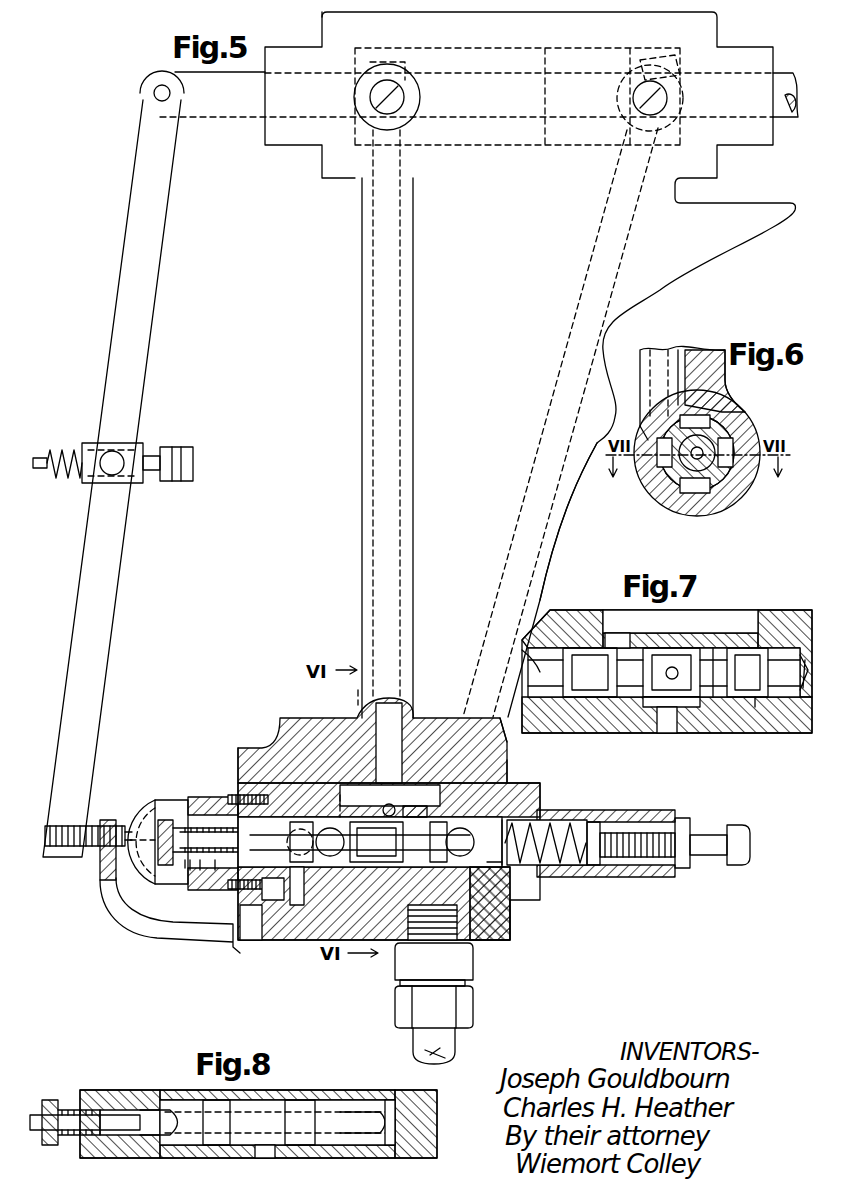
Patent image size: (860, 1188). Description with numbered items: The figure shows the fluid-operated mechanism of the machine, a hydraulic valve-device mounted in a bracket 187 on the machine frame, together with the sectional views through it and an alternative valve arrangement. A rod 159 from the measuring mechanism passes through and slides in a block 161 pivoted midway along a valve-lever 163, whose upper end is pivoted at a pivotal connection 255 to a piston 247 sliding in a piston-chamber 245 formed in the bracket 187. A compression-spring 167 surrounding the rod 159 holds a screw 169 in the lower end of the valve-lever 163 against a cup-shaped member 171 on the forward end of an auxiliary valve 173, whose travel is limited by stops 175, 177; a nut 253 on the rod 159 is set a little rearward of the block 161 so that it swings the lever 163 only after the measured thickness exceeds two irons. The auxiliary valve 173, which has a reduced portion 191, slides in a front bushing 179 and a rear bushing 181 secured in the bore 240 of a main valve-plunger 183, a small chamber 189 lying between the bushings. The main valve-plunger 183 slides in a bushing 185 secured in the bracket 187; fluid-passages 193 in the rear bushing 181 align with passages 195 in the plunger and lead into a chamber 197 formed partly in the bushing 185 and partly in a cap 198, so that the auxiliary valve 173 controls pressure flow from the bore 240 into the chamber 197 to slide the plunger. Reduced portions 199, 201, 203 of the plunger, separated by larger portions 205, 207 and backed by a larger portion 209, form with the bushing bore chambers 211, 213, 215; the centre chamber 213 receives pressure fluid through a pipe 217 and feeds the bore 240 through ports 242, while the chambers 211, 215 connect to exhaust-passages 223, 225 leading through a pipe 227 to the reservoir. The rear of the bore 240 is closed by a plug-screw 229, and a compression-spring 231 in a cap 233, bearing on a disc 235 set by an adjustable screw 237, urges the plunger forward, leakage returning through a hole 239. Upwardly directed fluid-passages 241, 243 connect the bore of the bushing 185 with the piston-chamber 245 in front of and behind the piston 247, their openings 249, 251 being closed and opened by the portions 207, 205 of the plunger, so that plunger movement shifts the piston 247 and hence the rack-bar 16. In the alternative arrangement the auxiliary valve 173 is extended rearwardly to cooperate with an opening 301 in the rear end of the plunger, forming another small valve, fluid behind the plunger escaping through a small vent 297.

In FIG. 5, the rack-bar 16 is at (783, 82).
In FIG. 5, the rod 159 is at (152, 453).
In FIG. 5, the block 161 is at (132, 484).
In FIG. 5, the valve-lever 163 is at (118, 357).
In FIG. 5, the compression-spring 167 is at (70, 450).
In FIG. 5, the screw 169 is at (45, 825).
In FIG. 5, the cup-shaped member 171 is at (132, 818).
In FIG. 5, the auxiliary valve 173 is at (162, 800).
In FIG. 8, the auxiliary valve 173 is at (42, 1110).
In FIG. 5, the stop 175 is at (107, 885).
In FIG. 5, the rear stop 177 is at (192, 797).
In FIG. 5, the front bushing 179 is at (128, 883).
In FIG. 5, the rear bushing 181 is at (200, 870).
In FIG. 5, the main valve-plunger 183 is at (185, 870).
In FIG. 7, the main valve-plunger 183 is at (532, 678).
In FIG. 8, the main valve-plunger 183 is at (108, 1110).
In FIG. 5, the bushing 185 is at (452, 790).
In FIG. 6, the bushing 185 is at (662, 495).
In FIG. 7, the bushing 185 is at (556, 614).
In FIG. 5, the bracket 187 is at (546, 531).
In FIG. 6, the bracket 187 is at (722, 495).
In FIG. 5, the small chamber 189 is at (207, 820).
In FIG. 5, the reduced portion 191 is at (276, 889).
In FIG. 5, the fluid-passages 193 is at (215, 870).
In FIG. 5, the passages 195 is at (232, 794).
In FIG. 5, the chamber 197 is at (228, 878).
In FIG. 5, the cap 198 is at (190, 870).
In FIG. 5, the reduced portion 199 is at (300, 868).
In FIG. 7, the reduced portion 199 is at (590, 672).
In FIG. 5, the reduced portion 201 is at (425, 864).
In FIG. 7, the reduced portion 201 is at (685, 650).
In FIG. 5, the reduced portion 203 is at (487, 900).
In FIG. 7, the reduced portion 203 is at (747, 672).
In FIG. 5, the larger portion 205 is at (345, 862).
In FIG. 6, the larger portion 205 is at (714, 448).
In FIG. 7, the larger portion 205 is at (630, 690).
In FIG. 8, the larger portion 205 is at (215, 1140).
In FIG. 5, the larger portion 207 is at (434, 966).
In FIG. 7, the larger portion 207 is at (713, 655).
In FIG. 8, the larger portion 207 is at (300, 1140).
In FIG. 5, the larger portion 209 is at (522, 875).
In FIG. 7, the larger portion 209 is at (783, 652).
In FIG. 5, the chamber 211 is at (297, 905).
In FIG. 5, the centre chamber 213 is at (372, 858).
In FIG. 5, the chamber 215 is at (480, 905).
In FIG. 7, the chamber 215 is at (752, 692).
In FIG. 7, the pipe 217 is at (668, 722).
In FIG. 5, the exhaust-passage 223 is at (262, 905).
In FIG. 5, the exhaust-passage 225 is at (470, 915).
In FIG. 5, the pipe 227 is at (416, 1048).
In FIG. 5, the plug-screw 229 is at (512, 790).
In FIG. 5, the compression-spring 231 is at (548, 822).
In FIG. 5, the cap 233 is at (632, 814).
In FIG. 5, the disc 235 is at (592, 838).
In FIG. 5, the adjustable screw 237 is at (668, 877).
In FIG. 5, the hole 239 is at (520, 890).
In FIG. 5, the bore 240 is at (293, 780).
In FIG. 5, the fluid-passage 241 is at (392, 481).
In FIG. 6, the fluid-passage 241 is at (705, 360).
In FIG. 5, the ports 242 is at (377, 801).
In FIG. 7, the ports 242 is at (672, 666).
In FIG. 5, the fluid-passage 243 is at (552, 474).
In FIG. 5, the piston-chamber 245 is at (468, 136).
In FIG. 5, the piston 247 is at (588, 130).
In FIG. 5, the opening 249 is at (416, 801).
In FIG. 6, the opening 249 is at (722, 413).
In FIG. 5, the opening 251 is at (342, 795).
In FIG. 6, the opening 251 is at (640, 468).
In FIG. 7, the opening 251 is at (622, 634).
In FIG. 5, the nut 253 is at (185, 482).
In FIG. 5, the pivotal connection 255 is at (155, 93).
In FIG. 8, the vent 297 is at (392, 1145).
In FIG. 8, the opening 301 is at (378, 1110).